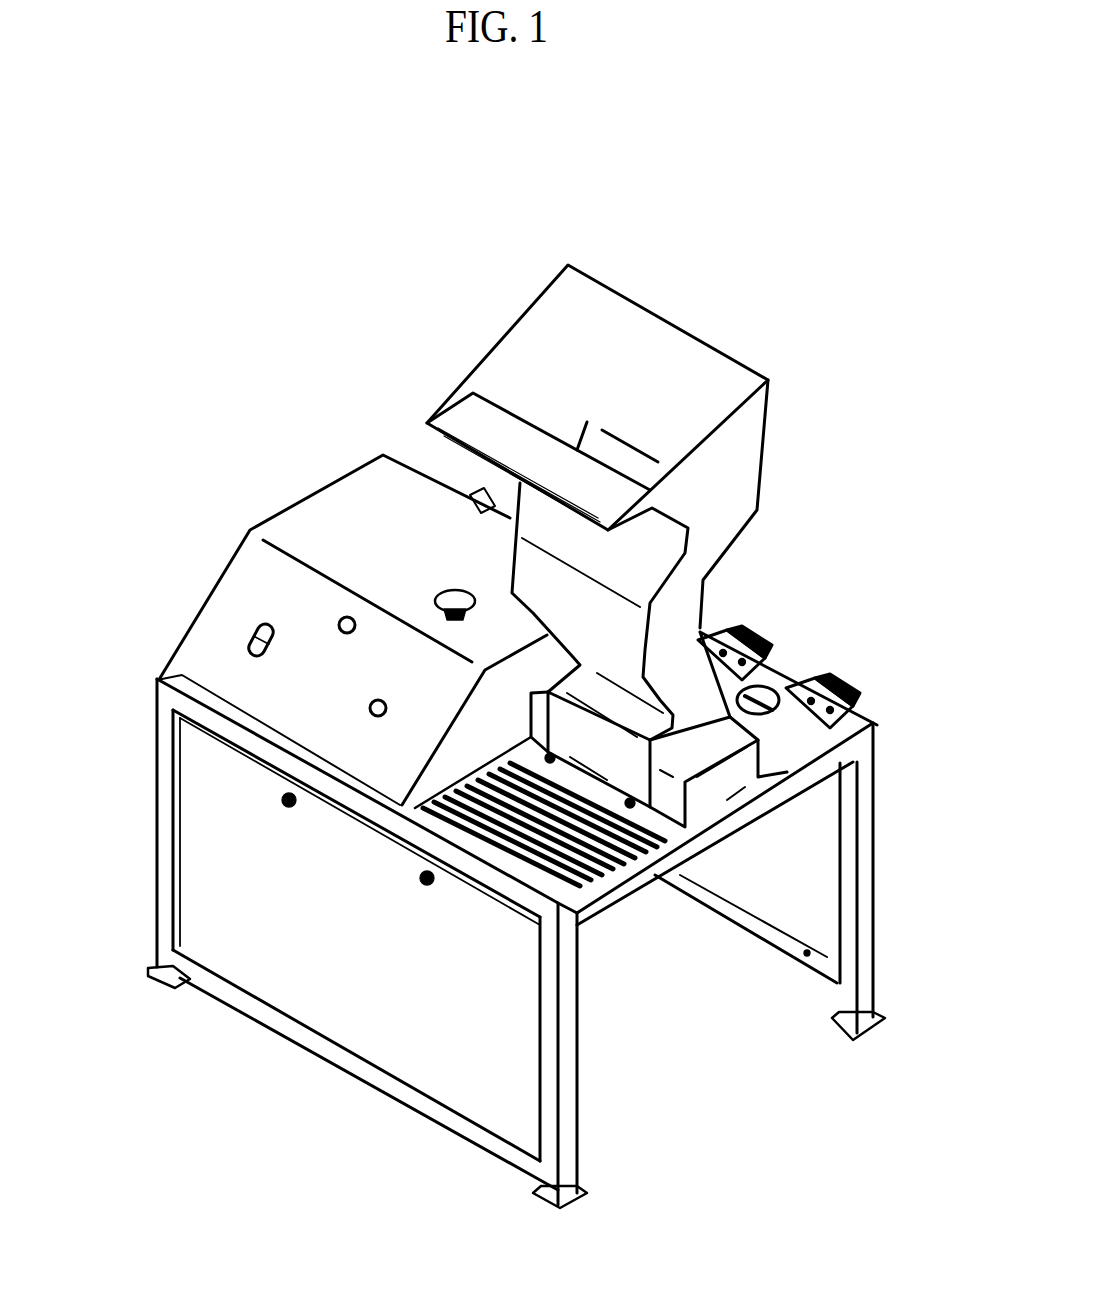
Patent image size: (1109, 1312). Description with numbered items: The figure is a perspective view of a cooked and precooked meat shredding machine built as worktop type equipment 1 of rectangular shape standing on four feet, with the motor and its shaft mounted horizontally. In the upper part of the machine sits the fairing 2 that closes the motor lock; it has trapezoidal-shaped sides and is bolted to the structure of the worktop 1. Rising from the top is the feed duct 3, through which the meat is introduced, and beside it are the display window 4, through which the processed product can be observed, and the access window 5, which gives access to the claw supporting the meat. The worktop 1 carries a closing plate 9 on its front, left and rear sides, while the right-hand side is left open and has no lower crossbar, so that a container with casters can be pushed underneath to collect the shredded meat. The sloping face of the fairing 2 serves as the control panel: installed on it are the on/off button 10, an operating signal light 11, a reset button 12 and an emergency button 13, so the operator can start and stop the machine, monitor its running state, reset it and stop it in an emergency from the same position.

The worktop type equipment 1 is at (172, 697).
The fairing 2 is at (335, 515).
The feed duct 3 is at (656, 360).
The display window 4 is at (650, 828).
The access window 5 is at (803, 742).
The closing plate 9 is at (340, 955).
The on/off button 10 is at (252, 637).
The operating signal light 11 is at (343, 620).
The reset button 12 is at (372, 703).
The emergency button 13 is at (453, 595).